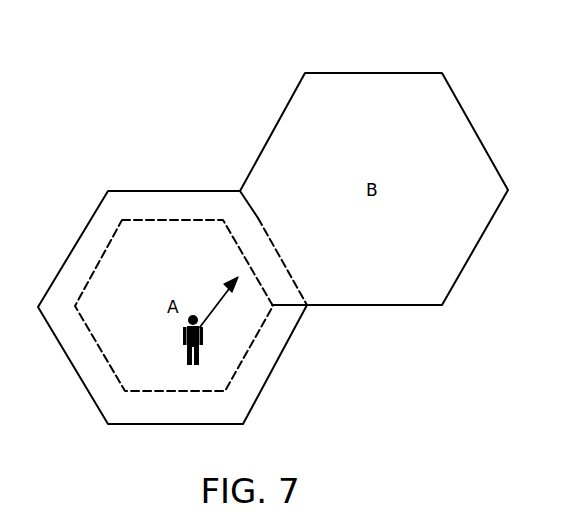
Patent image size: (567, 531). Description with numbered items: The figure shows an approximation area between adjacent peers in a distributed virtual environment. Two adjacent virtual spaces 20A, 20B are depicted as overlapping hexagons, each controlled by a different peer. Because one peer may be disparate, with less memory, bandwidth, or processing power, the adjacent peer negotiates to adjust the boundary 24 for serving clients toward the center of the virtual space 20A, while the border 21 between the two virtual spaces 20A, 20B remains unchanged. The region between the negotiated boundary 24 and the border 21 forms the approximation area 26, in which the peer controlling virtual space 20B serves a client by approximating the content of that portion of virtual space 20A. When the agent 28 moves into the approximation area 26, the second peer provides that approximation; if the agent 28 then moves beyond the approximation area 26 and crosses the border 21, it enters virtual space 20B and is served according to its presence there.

The virtual space 20A is at (108, 191).
The virtual space 20B is at (442, 73).
The border 21 is at (257, 215).
The boundary 24 is at (293, 280).
The approximation area 26 is at (238, 215).
The agent 28 is at (198, 348).